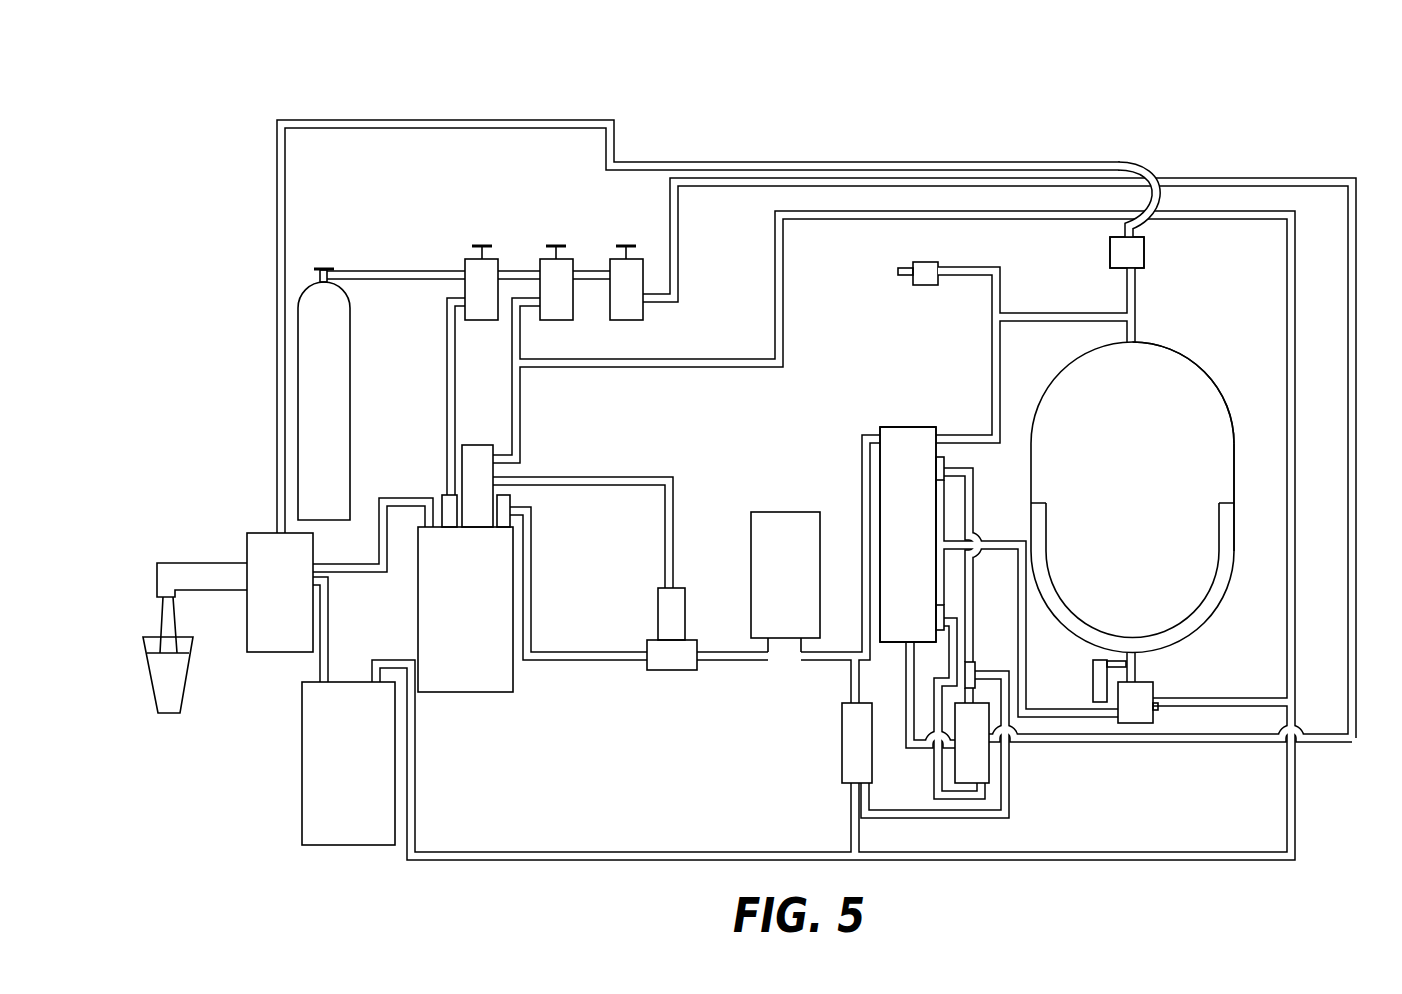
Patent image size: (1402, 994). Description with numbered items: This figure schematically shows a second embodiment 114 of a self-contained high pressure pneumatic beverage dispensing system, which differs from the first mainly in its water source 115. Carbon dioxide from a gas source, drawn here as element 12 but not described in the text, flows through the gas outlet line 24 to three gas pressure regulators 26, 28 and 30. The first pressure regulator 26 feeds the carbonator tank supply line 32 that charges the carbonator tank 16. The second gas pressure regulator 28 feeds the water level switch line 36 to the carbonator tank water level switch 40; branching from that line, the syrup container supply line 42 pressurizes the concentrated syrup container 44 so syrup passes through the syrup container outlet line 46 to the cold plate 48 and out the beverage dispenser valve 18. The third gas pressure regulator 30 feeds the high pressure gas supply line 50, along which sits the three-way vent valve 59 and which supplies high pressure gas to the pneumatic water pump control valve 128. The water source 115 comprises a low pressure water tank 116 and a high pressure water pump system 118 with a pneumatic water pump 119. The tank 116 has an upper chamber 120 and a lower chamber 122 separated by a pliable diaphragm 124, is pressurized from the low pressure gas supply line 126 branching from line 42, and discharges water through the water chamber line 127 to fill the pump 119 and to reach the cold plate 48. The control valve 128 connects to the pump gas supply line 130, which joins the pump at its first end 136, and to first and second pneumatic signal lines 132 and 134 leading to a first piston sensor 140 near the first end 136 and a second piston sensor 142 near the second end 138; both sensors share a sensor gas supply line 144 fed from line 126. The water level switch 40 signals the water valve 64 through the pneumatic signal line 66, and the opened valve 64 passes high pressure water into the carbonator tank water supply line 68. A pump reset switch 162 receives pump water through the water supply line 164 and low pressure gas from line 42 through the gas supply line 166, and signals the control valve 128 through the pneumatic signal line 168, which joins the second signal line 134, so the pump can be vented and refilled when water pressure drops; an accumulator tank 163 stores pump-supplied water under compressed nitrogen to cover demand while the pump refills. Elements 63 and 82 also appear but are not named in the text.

The gas cylinder 12 is at (366, 400).
The carbonator tank 16 is at (475, 696).
The beverage dispenser valve 18 is at (196, 562).
The gas outlet line 24 is at (390, 270).
The first pressure regulator 26 is at (480, 262).
The second gas pressure regulator 28 is at (553, 262).
The third gas pressure regulator 30 is at (622, 262).
The carbonator tank supply line 32 is at (457, 412).
The carbonator tank water level switch line 36 is at (522, 345).
The carbonator tank water level switch 40 is at (512, 467).
The syrup container supply line 42 is at (697, 368).
The concentrated syrup container 44 is at (355, 835).
The syrup container outlet line 46 is at (329, 641).
The cold plate 48 is at (275, 641).
The high pressure gas supply line 50 is at (724, 187).
The three-way vent valve 59 is at (1135, 725).
The relief valve 63 is at (931, 287).
The water valve 64 is at (672, 672).
The pneumatic signal line 66 is at (641, 477).
The carbonator tank water supply line 68 is at (567, 661).
The feed line 82 is at (345, 573).
The second embodiment 114 is at (1060, 119).
The water source 115 is at (1220, 322).
The low pressure water tank 116 is at (1236, 405).
The high pressure water pump system 118 is at (905, 402).
The pneumatic water pump 119 is at (915, 428).
The upper chamber 120 is at (1113, 482).
The lower chamber 122 is at (1180, 651).
The pliable diaphragm 124 is at (1205, 612).
The low pressure gas supply line 126 is at (1215, 744).
The water chamber line 127 is at (1137, 332).
The pneumatic water pump control valve 128 is at (982, 772).
The pump gas supply line 130 is at (930, 749).
The first pneumatic signal line 132 is at (943, 799).
The second pneumatic signal line 134 is at (974, 522).
The first end 136 is at (891, 648).
The second end 138 is at (884, 420).
The first piston sensor 140 is at (934, 614).
The second piston sensor 142 is at (946, 465).
The sensor gas supply line 144 is at (1017, 648).
The pump reset switch 162 is at (848, 752).
The accumulator tank 163 is at (768, 592).
The water supply line 164 is at (851, 668).
The gas supply line 166 is at (851, 815).
The pneumatic signal line 168 is at (1011, 770).